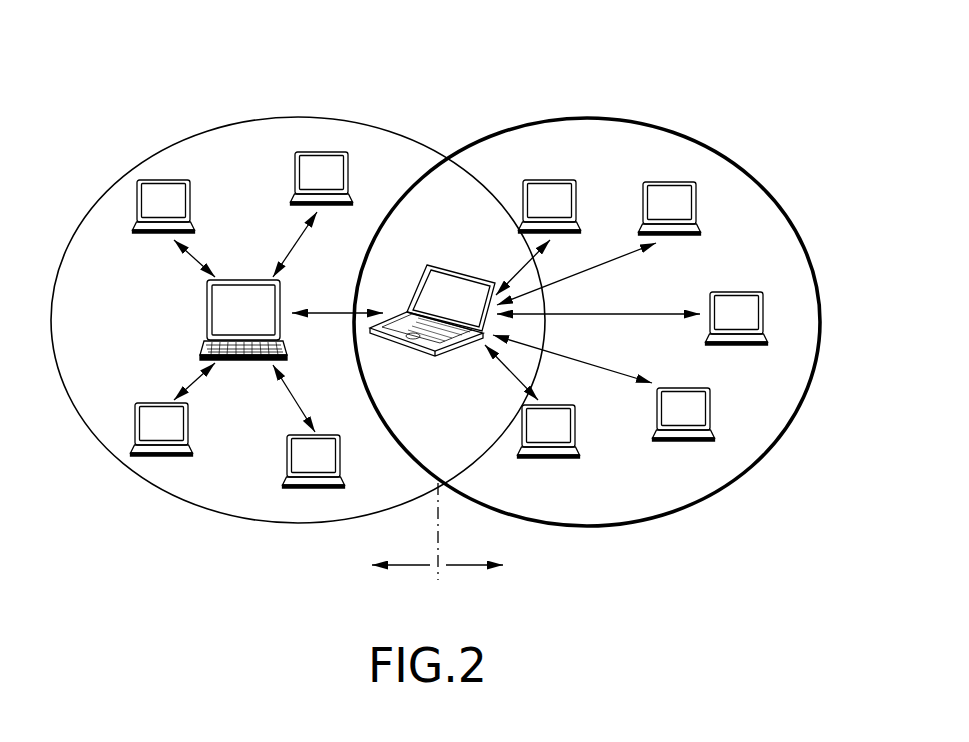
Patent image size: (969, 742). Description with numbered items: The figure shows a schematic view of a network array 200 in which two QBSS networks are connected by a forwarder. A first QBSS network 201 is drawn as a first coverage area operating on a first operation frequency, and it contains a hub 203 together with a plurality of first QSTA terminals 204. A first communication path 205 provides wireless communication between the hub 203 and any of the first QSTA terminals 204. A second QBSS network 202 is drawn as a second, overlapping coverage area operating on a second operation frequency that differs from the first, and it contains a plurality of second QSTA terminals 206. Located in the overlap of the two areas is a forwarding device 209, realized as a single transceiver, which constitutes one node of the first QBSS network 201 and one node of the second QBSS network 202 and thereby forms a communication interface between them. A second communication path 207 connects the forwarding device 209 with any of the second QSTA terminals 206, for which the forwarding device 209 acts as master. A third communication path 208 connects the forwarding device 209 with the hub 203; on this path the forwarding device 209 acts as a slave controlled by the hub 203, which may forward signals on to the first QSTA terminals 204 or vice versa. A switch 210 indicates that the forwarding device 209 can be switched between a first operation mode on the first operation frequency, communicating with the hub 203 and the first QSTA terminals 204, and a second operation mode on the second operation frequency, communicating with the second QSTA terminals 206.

The network array 200 is at (722, 81).
The first QBSS network 201 is at (319, 100).
The second QBSS network 202 is at (638, 100).
The hub 203 is at (207, 312).
The first QSTA terminals 204 is at (294, 175).
The first communication path 205 is at (291, 237).
The second QSTA terminals 206 is at (643, 193).
The second communication path 207 is at (520, 274).
The third communication path 208 is at (323, 312).
The forwarding device 209 is at (422, 348).
The switch 210 is at (422, 566).